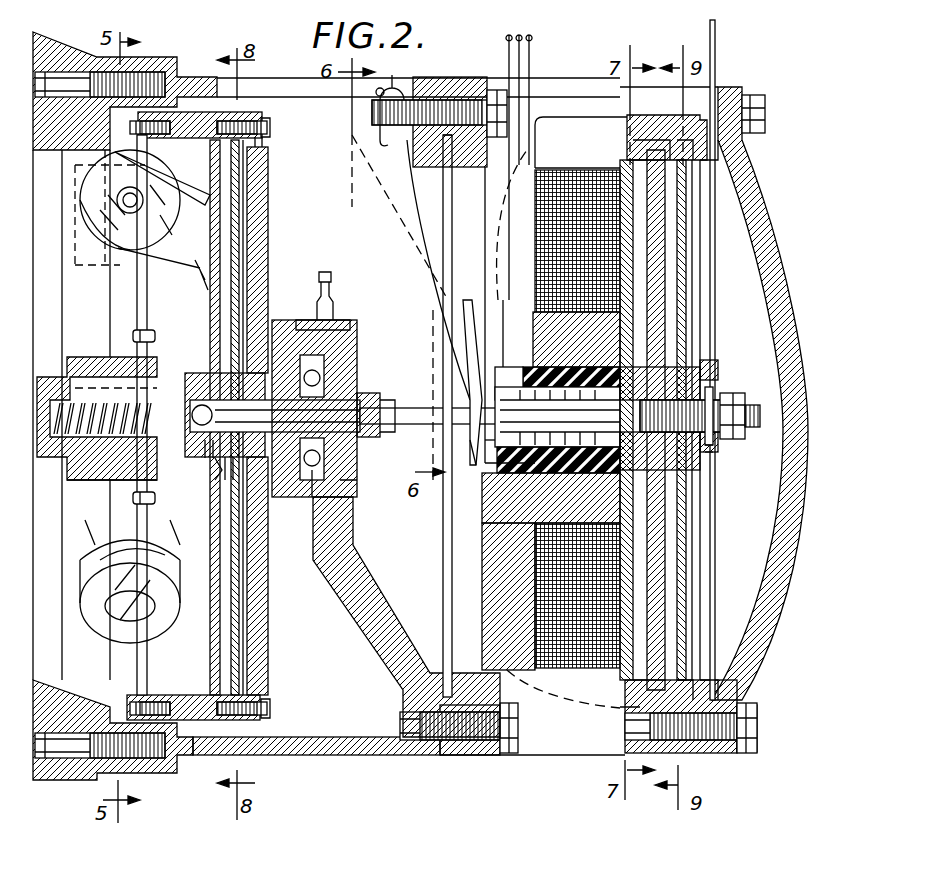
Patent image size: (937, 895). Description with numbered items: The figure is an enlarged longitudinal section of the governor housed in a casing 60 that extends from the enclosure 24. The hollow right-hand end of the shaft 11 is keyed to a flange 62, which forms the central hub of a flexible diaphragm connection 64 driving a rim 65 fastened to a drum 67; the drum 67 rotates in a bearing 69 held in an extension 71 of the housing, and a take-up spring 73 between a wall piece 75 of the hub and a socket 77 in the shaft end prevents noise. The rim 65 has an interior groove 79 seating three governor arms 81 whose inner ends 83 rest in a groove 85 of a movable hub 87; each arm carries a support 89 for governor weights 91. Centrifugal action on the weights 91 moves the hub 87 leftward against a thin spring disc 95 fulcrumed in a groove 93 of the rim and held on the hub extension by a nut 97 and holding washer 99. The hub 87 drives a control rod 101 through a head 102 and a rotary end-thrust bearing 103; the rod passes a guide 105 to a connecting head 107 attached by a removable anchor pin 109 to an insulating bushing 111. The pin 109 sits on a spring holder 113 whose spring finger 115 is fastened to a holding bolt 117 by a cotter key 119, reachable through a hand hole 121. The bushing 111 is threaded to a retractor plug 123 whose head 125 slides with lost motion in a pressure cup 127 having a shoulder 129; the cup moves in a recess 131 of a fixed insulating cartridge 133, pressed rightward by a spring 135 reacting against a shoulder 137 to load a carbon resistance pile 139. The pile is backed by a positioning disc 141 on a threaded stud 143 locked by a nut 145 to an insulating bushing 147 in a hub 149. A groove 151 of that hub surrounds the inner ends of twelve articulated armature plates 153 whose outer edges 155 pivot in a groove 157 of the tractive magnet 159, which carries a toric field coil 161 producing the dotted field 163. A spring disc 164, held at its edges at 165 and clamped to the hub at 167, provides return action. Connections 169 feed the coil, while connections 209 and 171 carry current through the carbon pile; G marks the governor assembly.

The shaft 11 is at (53, 458).
The enclosure 24 is at (56, 48).
The casing 60 is at (740, 94).
The flange 62 is at (86, 478).
The flexible diaphragm connection 64 is at (136, 276).
The rim 65 is at (226, 114).
The drum 67 is at (264, 226).
The bearing 69 is at (326, 472).
The extension 71 is at (366, 606).
The take-up spring 73 is at (136, 478).
The wall piece 75 is at (148, 328).
The socket 77 is at (55, 380).
The interior groove 79 is at (210, 152).
The governor arms 81 is at (238, 266).
The inner ends 83 is at (205, 372).
The groove 85 is at (212, 456).
The hub 87 is at (228, 455).
The support 89 is at (210, 200).
The governor weights 91 is at (165, 232).
The groove 93 is at (263, 140).
The spring disc 95 is at (243, 605).
The nut 97 is at (300, 336).
The holding washer 99 is at (300, 322).
The control rod 101 is at (398, 404).
The head 102 is at (216, 462).
The rotary end-thrust bearing 103 is at (205, 384).
The guide 105 is at (398, 436).
The connecting head 107 is at (451, 402).
The anchor pin 109 is at (468, 322).
The insulating bushing 111 is at (473, 446).
The spring holder 113 is at (428, 196).
The spring finger 115 is at (398, 76).
The holding bolt 117 is at (446, 150).
The cotter key 119 is at (382, 136).
The hand hole 121 is at (289, 86).
The retractor plug 123 is at (526, 474).
The head 125 is at (582, 474).
The pressure cup 127 is at (560, 366).
The shoulder 129 is at (515, 365).
The recess 131 is at (520, 375).
The insulating cartridge 133 is at (630, 460).
The spring 135 is at (500, 470).
The shoulder 137 is at (492, 462).
The carbon resistance pile 139 is at (650, 445).
The positioning disc 141 is at (665, 445).
The threaded stud 143 is at (712, 396).
The nut 145 is at (738, 398).
The insulating bushing 147 is at (712, 448).
The hub 149 is at (712, 456).
The groove 151 is at (690, 352).
The armature plates 153 is at (660, 228).
The outer edges 155 is at (655, 157).
The groove 157 is at (650, 143).
The tractive magnet 159 is at (642, 116).
The field coil 161 is at (570, 175).
The toric field 163 is at (566, 135).
The spring disc 164 is at (684, 280).
The edge holding 165 is at (665, 160).
The center clamp 167 is at (704, 372).
The connections 169 is at (530, 60).
The right-hand connection 171 is at (716, 64).
The left-hand connection 209 is at (507, 78).
The generator G is at (312, 758).